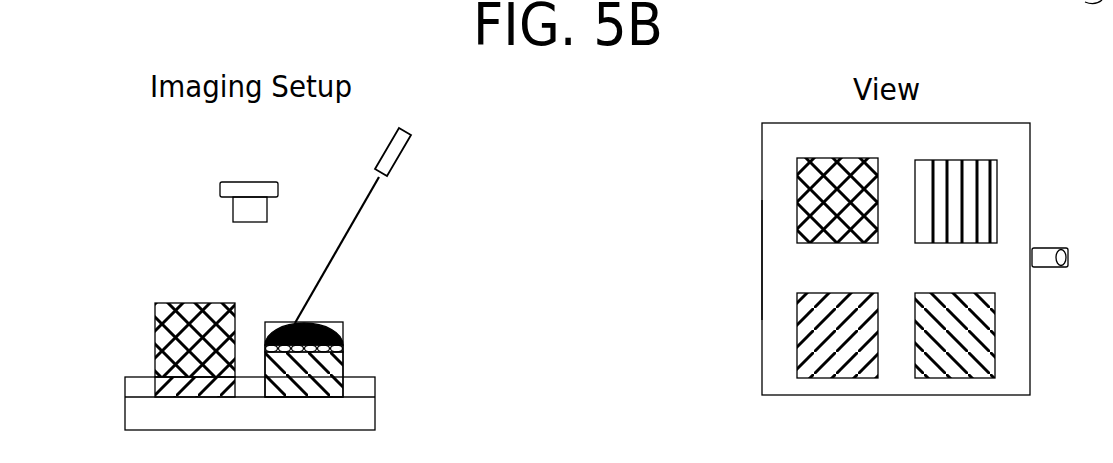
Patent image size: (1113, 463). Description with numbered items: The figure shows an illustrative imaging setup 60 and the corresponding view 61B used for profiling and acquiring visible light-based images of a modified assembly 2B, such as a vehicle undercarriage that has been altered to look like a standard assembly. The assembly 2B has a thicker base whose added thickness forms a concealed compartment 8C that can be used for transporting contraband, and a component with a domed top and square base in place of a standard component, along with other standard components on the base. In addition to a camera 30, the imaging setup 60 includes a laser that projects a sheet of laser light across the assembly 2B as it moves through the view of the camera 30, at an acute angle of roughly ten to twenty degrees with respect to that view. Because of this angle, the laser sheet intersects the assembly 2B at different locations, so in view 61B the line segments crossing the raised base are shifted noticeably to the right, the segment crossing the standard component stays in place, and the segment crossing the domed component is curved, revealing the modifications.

The imaging setup 60 is at (118, 150).
The modified assembly 2B is at (122, 275).
The concealed compartment 8C is at (376, 387).
The camera 30 is at (249, 182).
The view 61B is at (723, 168).